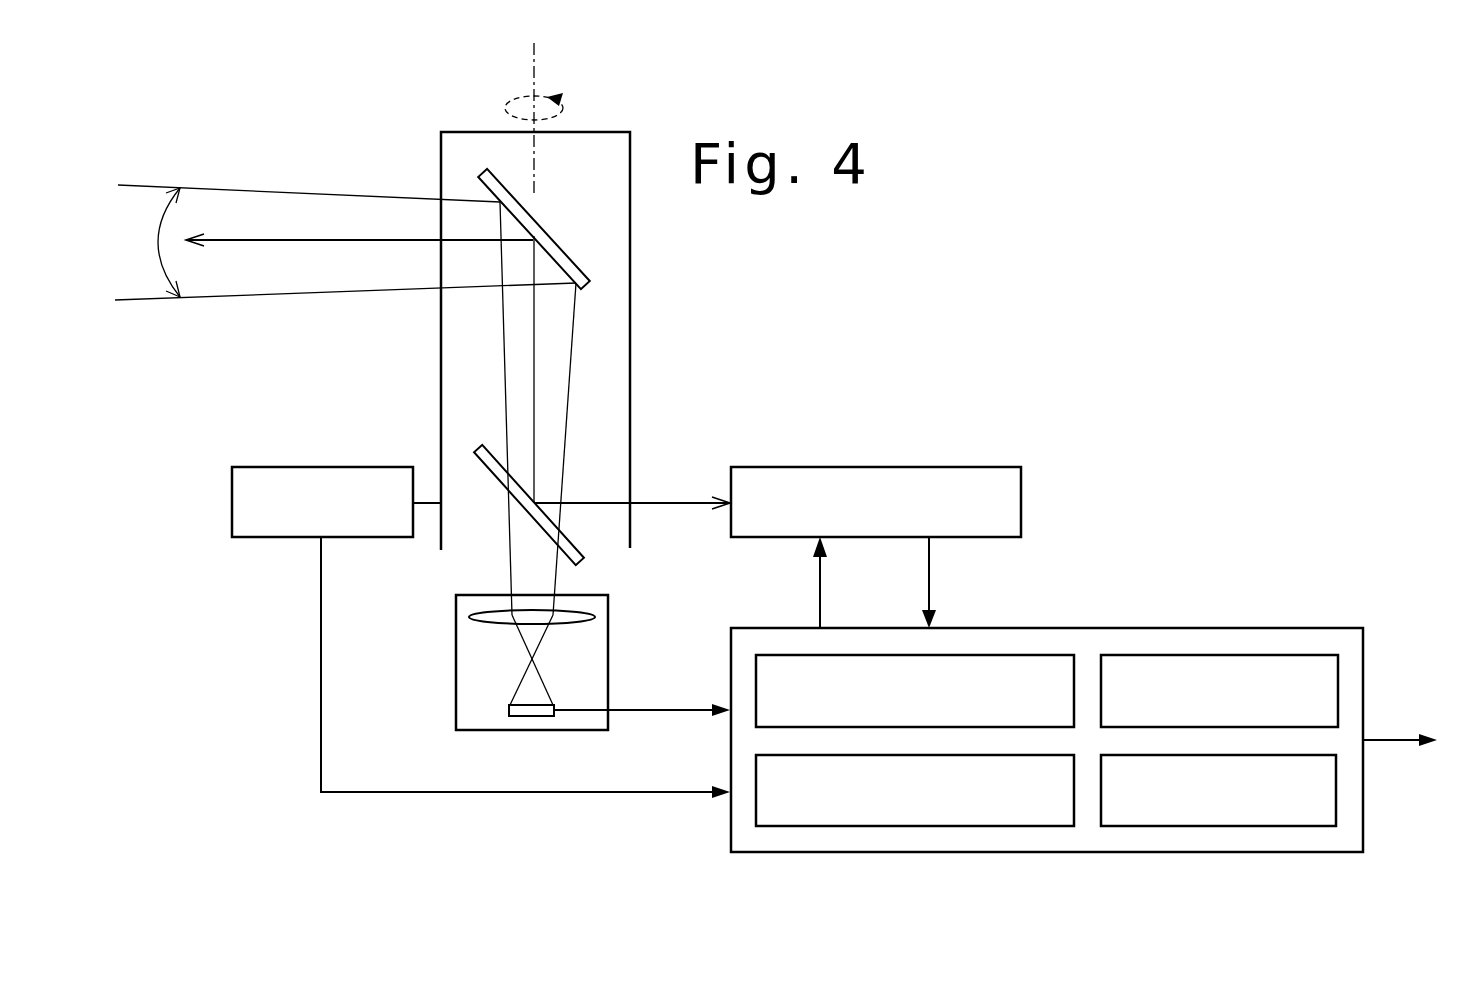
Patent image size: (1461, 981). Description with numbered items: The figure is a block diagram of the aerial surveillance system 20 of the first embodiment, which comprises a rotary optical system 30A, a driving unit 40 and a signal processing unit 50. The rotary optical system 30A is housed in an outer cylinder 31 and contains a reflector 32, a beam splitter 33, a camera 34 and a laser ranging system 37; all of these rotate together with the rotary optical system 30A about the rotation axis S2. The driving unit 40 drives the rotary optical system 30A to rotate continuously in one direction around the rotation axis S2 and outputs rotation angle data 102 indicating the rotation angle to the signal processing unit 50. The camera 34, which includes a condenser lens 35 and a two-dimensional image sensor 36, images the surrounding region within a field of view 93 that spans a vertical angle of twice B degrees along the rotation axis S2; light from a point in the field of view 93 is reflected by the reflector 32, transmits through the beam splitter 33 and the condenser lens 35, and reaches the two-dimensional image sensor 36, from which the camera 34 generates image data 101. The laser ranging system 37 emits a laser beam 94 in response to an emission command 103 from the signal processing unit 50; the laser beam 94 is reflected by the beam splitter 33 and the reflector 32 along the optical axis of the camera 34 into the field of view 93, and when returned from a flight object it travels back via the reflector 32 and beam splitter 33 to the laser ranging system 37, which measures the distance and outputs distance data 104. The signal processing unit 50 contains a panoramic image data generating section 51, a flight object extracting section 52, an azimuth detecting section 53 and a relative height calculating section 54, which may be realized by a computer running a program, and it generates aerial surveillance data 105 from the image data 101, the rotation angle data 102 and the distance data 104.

The aerial surveillance system 20 is at (968, 285).
The rotary optical system 30A is at (762, 300).
The outer cylinder 31 is at (630, 247).
The reflector 32 is at (543, 230).
The beam splitter 33 is at (483, 470).
The camera 34 is at (610, 662).
The condenser lens 35 is at (470, 617).
The 2-dimensional image sensor 36 is at (508, 710).
The laser ranging system 37 is at (875, 467).
The driving unit 40 is at (323, 467).
The signal processing unit 50 is at (1087, 627).
The panoramic image data generating section 51 is at (756, 690).
The flight object extracting section 52 is at (1340, 692).
The azimuth detecting section 53 is at (756, 789).
The relative height calculating section 54 is at (1337, 787).
The field of view 93 is at (242, 189).
The laser beam 94 is at (670, 500).
The image data 101 is at (643, 713).
The rotation angle data 102 is at (643, 795).
The emission command 103 is at (820, 578).
The distance data 104 is at (930, 578).
The aerial surveillance data 105 is at (1375, 737).
The rotation axis S2 is at (535, 80).